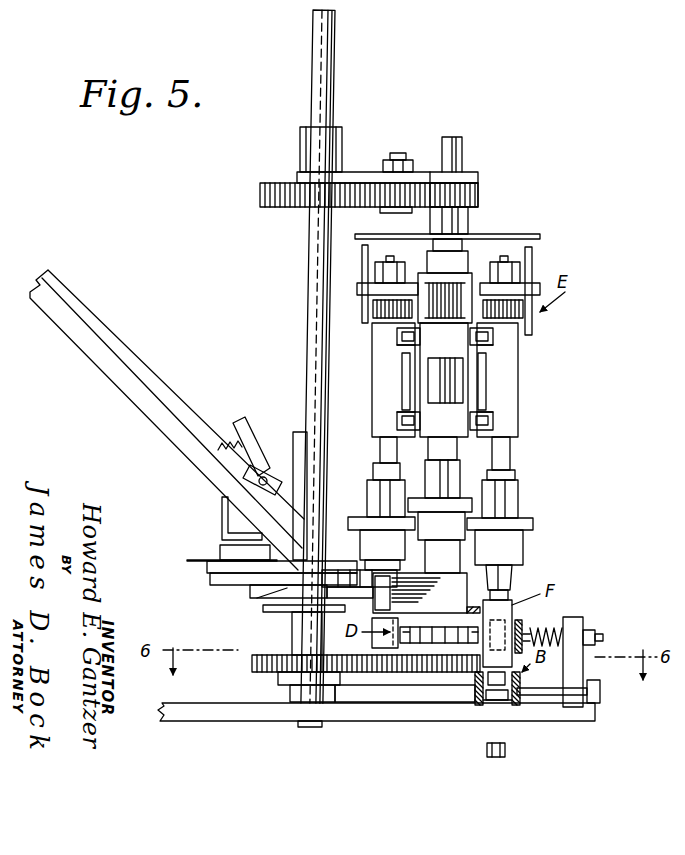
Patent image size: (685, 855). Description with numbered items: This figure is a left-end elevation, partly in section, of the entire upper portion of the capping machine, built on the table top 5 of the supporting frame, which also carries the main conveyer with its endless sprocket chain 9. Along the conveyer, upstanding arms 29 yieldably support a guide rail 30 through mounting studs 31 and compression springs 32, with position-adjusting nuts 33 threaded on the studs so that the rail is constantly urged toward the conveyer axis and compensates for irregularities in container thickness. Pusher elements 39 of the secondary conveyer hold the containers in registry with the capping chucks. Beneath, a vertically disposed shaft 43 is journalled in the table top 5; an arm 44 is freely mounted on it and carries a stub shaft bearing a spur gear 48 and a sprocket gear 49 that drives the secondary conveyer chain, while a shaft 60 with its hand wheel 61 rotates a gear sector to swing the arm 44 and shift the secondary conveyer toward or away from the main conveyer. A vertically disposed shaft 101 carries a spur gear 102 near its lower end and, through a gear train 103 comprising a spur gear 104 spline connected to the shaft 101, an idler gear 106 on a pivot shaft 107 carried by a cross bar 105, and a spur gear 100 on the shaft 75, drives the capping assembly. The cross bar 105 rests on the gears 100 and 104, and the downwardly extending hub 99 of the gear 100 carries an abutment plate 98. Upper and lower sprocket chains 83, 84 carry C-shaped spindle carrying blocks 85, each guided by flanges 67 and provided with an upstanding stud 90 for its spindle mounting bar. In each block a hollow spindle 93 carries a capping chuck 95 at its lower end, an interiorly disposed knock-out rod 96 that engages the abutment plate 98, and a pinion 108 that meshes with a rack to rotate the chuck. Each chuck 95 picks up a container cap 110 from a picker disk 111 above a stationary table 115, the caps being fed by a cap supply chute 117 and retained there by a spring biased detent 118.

The table top 5 is at (215, 703).
The sprocket chain 9 is at (488, 692).
The upstanding arms 29 is at (580, 617).
The guide rail 30 is at (522, 625).
The mounting studs 31 is at (603, 638).
The compression springs 32 is at (545, 630).
The position-adjusting nuts 33 is at (592, 633).
The pusher elements 39 is at (372, 641).
The shaft 43 is at (385, 728).
The arm 44 is at (380, 692).
The spur gear 48 is at (440, 686).
The sprocket gear 49 is at (445, 630).
The shaft 60 is at (545, 686).
The hand wheel 61 is at (603, 695).
The flanges 67 is at (398, 372).
The shaft 75 is at (462, 143).
The sprocket chain 83 is at (495, 350).
The sprocket chain 84 is at (495, 412).
The spindle carrying blocks 85 is at (378, 405).
The stud 90 is at (533, 256).
The hollow spindle 93 is at (508, 450).
The capping chuck 95 is at (522, 543).
The knock-out rod 96 is at (505, 262).
The abutment plate 98 is at (530, 234).
The hub 99 is at (465, 220).
The spur gear 100 is at (480, 193).
The shaft 101 is at (308, 330).
The spur gear 102 is at (276, 655).
The gear train 103 is at (357, 160).
The spur gear 104 is at (258, 192).
The cross bar 105 is at (474, 178).
The idler gear 106 is at (392, 207).
The pivot shaft 107 is at (402, 153).
The pinion 108 is at (373, 308).
The container cap 110 is at (512, 578).
The picker disk 111 is at (208, 576).
The table 115 is at (210, 598).
The cap supply chute 117 is at (110, 334).
The spring biased detent 118 is at (258, 432).